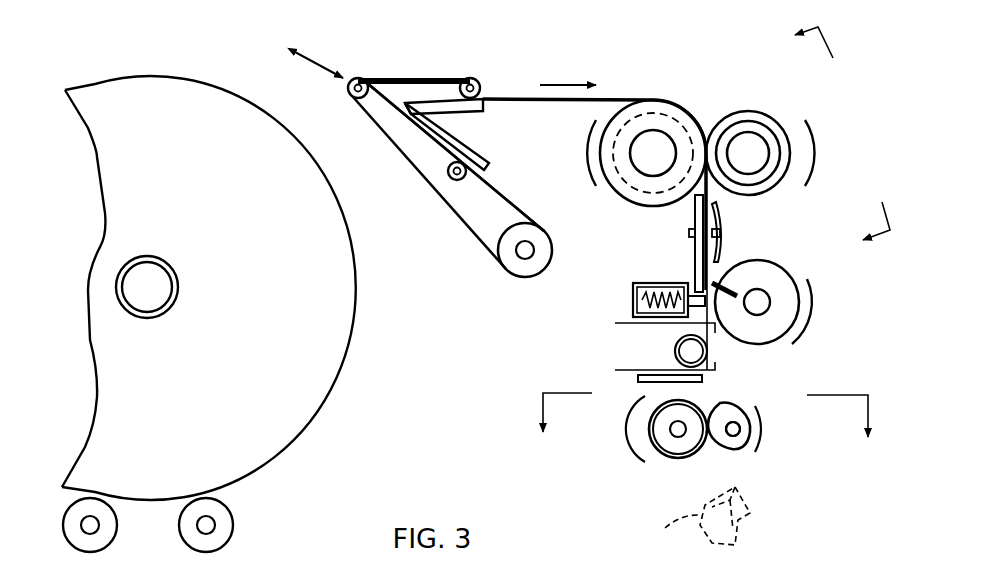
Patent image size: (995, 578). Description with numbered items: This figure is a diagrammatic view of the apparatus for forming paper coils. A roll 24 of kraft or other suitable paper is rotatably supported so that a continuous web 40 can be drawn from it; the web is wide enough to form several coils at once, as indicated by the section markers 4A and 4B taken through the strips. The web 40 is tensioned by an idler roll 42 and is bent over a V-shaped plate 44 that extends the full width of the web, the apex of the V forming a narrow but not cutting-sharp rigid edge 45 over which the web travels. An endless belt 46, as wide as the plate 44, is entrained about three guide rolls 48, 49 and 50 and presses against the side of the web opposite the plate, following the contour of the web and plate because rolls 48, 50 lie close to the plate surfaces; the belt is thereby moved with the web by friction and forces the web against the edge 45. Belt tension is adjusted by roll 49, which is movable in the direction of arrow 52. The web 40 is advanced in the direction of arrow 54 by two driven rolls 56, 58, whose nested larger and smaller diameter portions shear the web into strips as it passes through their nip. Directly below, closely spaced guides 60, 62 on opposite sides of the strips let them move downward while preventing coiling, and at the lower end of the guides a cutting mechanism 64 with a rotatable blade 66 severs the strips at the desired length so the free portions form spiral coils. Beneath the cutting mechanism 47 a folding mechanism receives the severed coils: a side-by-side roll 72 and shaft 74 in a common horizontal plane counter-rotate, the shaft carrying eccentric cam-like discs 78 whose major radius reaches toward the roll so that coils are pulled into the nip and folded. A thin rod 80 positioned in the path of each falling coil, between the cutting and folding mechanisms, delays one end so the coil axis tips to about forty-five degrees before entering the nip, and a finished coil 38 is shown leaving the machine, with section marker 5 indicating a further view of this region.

The roll 24 is at (313, 325).
The coil 38 is at (699, 523).
The web 40 is at (470, 252).
The idler roll 42 is at (518, 270).
The V-shaped plate 44 is at (460, 135).
The rigid edge 45 is at (417, 102).
The endless belt 46 is at (412, 148).
The cutting mechanism 47 is at (677, 283).
The guide roll 48 is at (450, 179).
The guide roll 49 is at (358, 78).
The guide roll 50 is at (475, 82).
The arrow 52 is at (323, 70).
The arrow 54 is at (548, 58).
The driven roll 56 is at (767, 110).
The driven roll 58 is at (687, 110).
The guide 60 is at (695, 225).
The guide 62 is at (718, 235).
The cutting mechanism 64 is at (745, 345).
The blade 66 is at (712, 275).
The roll 72 is at (683, 458).
The shaft 74 is at (747, 427).
The cam-like disc 78 is at (723, 443).
The thin rod 80 is at (658, 385).
The section line 4A is at (820, 140).
The section line 4B is at (642, 346).
The section line 5 is at (706, 434).